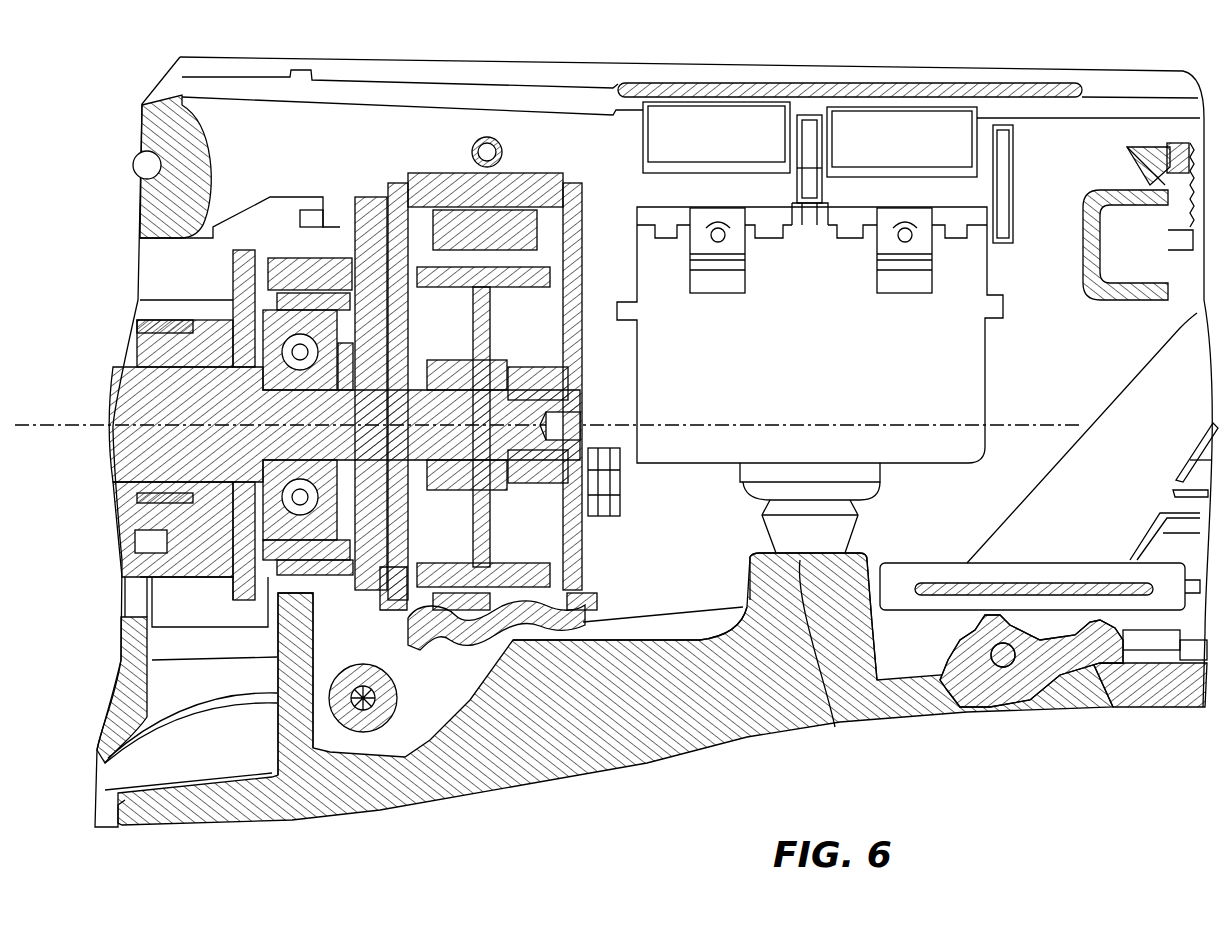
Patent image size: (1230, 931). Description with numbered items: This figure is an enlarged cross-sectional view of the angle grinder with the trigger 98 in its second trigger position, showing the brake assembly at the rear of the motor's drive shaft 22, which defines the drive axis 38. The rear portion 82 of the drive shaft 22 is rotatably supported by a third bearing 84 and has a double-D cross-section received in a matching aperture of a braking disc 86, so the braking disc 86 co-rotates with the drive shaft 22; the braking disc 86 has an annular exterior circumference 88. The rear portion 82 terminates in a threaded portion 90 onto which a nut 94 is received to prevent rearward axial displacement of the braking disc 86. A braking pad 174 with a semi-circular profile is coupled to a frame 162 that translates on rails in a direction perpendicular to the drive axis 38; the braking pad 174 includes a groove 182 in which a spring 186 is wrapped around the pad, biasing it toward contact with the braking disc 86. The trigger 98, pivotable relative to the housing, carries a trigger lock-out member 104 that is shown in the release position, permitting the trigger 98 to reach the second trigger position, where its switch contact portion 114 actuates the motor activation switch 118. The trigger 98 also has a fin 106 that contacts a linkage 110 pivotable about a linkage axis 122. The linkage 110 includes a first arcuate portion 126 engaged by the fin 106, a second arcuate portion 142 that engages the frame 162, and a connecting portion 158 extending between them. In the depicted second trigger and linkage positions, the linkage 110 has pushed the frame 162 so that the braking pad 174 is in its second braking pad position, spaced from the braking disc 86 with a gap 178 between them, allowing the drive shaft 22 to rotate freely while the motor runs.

The drive shaft 22 is at (160, 447).
The drive axis 38 is at (88, 425).
The rear portion 82 is at (397, 215).
The third bearing 84 is at (295, 320).
The braking disc 86 is at (530, 383).
The annular exterior circumference 88 is at (500, 290).
The threaded portion 90 is at (570, 388).
The nut 94 is at (640, 290).
The trigger 98 is at (747, 723).
The trigger lock-out member 104 is at (973, 700).
The fin 106 is at (545, 650).
The linkage 110 is at (398, 712).
The switch contact portion 114 is at (813, 643).
The motor activation switch 118 is at (927, 378).
The linkage axis 122 is at (337, 727).
The first arcuate portion 126 is at (583, 655).
The second arcuate portion 142 is at (443, 630).
The connecting portion 158 is at (510, 640).
The frame 162 is at (457, 410).
The braking pad 174 is at (467, 230).
The gap 178 is at (470, 205).
The groove 182 is at (515, 270).
The spring 186 is at (487, 137).